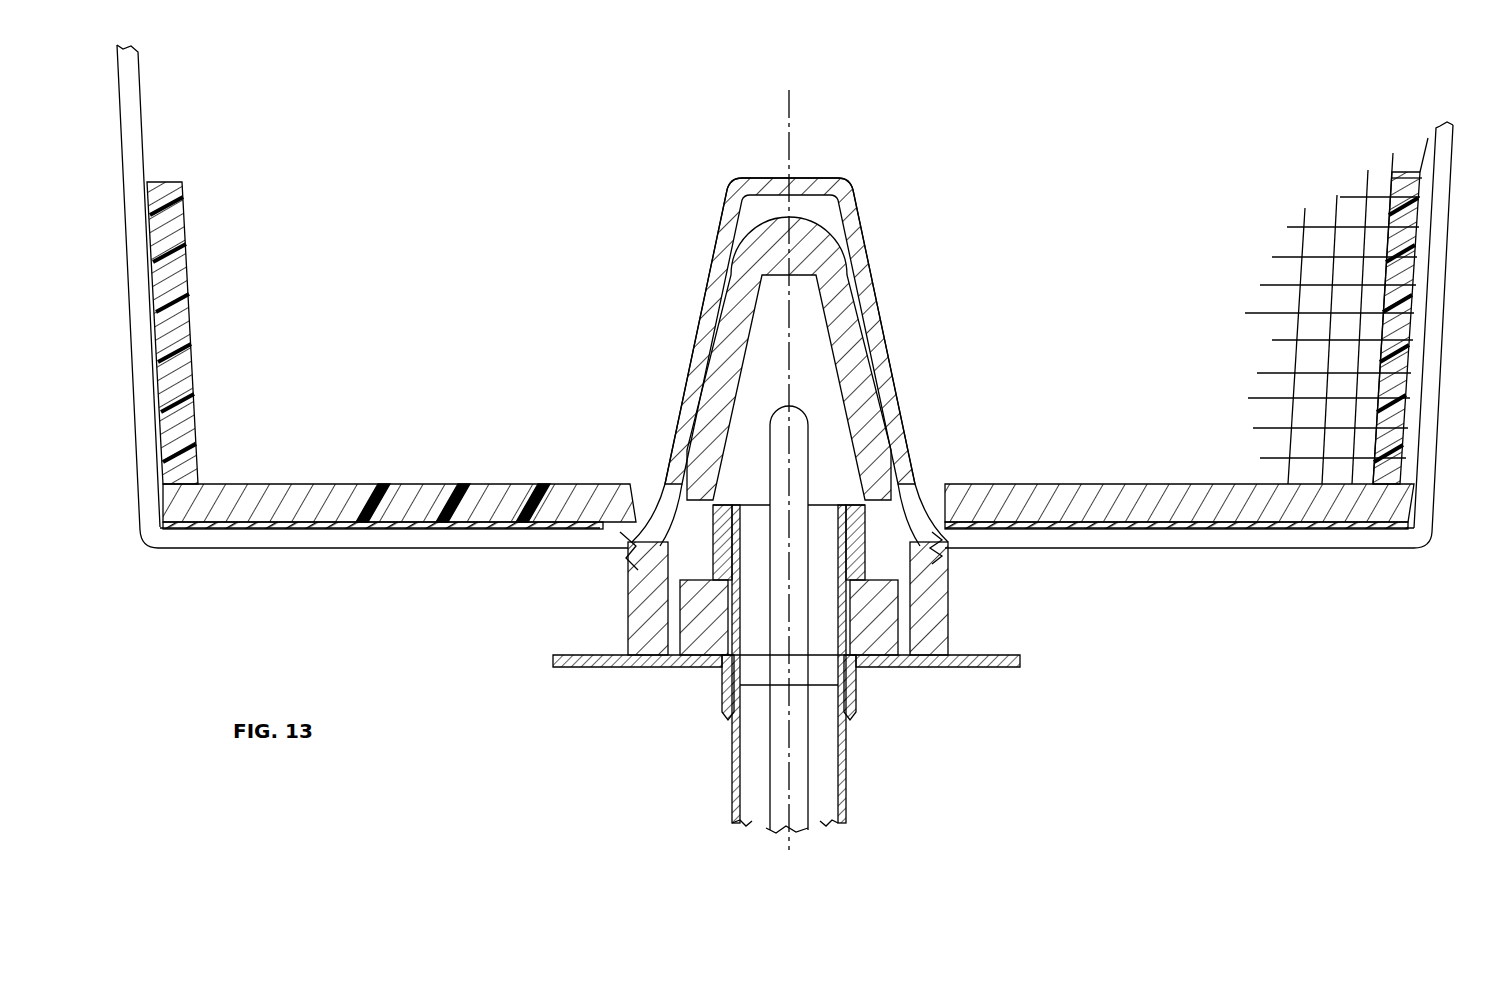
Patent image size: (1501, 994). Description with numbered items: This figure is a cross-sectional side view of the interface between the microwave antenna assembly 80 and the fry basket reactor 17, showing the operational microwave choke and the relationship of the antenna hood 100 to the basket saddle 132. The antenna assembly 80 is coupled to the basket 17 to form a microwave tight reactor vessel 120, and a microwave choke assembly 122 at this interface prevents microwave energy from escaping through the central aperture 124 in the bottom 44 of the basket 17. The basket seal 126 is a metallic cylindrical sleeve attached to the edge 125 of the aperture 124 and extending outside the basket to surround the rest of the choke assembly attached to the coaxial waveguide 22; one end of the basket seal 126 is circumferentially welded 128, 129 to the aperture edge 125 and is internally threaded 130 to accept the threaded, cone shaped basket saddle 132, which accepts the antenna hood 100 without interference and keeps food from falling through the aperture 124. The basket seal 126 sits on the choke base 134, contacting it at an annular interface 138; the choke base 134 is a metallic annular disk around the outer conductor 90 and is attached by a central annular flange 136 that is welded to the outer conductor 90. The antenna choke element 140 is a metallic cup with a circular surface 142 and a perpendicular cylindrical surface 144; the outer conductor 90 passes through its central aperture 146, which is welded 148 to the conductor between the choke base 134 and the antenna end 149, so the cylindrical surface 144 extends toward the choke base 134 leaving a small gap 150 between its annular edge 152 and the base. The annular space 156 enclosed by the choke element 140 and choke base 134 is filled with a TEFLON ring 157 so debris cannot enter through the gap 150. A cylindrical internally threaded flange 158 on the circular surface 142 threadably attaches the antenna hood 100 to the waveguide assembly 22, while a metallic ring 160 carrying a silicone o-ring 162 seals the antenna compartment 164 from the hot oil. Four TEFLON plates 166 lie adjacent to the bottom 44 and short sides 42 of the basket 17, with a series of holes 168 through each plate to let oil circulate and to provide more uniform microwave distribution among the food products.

The microwave antenna assembly 80 is at (801, 205).
The short sides 42 is at (140, 243).
The fry basket reactor 17 is at (136, 292).
The bottom 44 is at (1165, 536).
The TEFLON plates 166 is at (192, 238).
The holes 168 is at (536, 486).
The reactor vessel 120 is at (240, 380).
The antenna hood 100 is at (830, 276).
The basket saddle 132 is at (868, 293).
The antenna compartment 164 is at (815, 362).
The silicone o-ring 162 is at (694, 456).
The coaxial waveguide 22 is at (880, 814).
The outer conductor 90 is at (848, 789).
The metallic ring 160 is at (733, 520).
The central aperture 146 is at (742, 598).
The antenna end 149 is at (820, 508).
The circumferential weld 148 is at (848, 588).
The antenna choke element 140 is at (905, 626).
The internally threaded flange 158 is at (645, 612).
The cylindrical surface 144 is at (952, 598).
The circular surface 142 is at (968, 558).
The circumferential weld 129 is at (650, 570).
The basket seal 126 is at (935, 646).
The TEFLON ring 157 is at (716, 680).
The annular flange 136 is at (858, 712).
The annular space 156 is at (702, 668).
The annular edge 152 is at (670, 668).
The gap 150 is at (905, 666).
The annular interface 138 is at (950, 668).
The choke base 134 is at (1005, 666).
The microwave choke assembly 122 is at (580, 704).
The aperture edge 125 is at (602, 516).
The circumferential weld 128 is at (642, 492).
The internal threads 130 is at (1000, 522).
The central aperture 124 is at (918, 500).